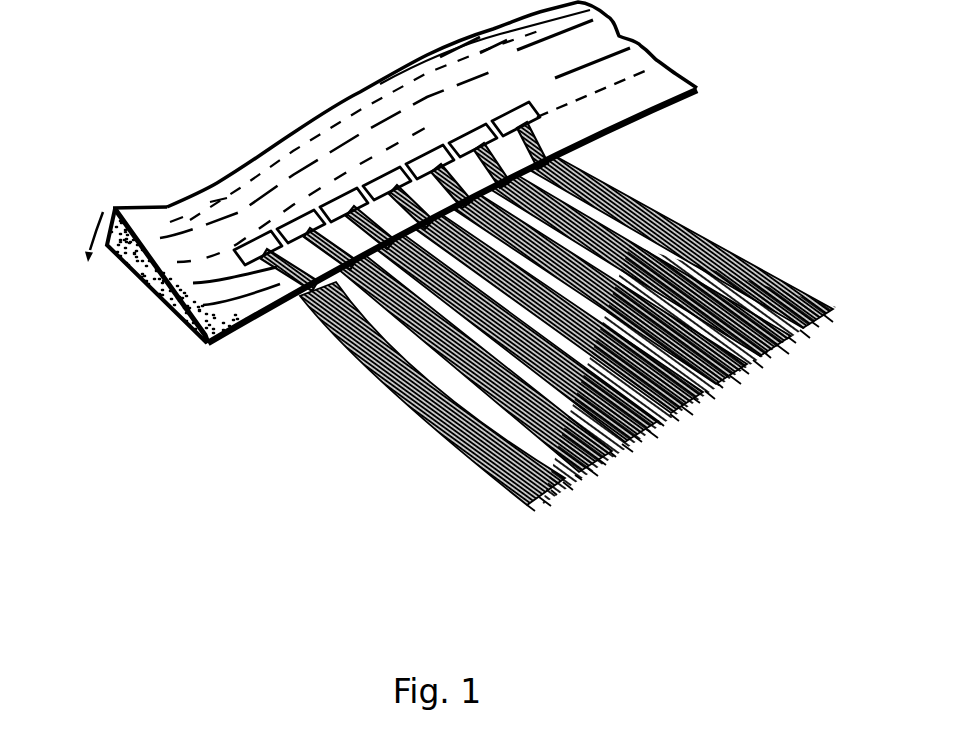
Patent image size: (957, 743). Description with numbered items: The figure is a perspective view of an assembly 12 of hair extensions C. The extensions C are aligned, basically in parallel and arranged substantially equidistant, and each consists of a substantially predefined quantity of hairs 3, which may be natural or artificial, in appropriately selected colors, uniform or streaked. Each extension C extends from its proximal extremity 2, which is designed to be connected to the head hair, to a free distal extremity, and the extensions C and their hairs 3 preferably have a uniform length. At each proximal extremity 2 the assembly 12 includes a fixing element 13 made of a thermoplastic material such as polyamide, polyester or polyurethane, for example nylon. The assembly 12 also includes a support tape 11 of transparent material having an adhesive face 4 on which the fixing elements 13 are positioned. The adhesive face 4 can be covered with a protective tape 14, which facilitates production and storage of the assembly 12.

The proximal extremity 2 is at (333, 290).
The hairs 3 is at (770, 282).
The adhesive face 4 is at (300, 232).
The support tape 11 is at (202, 338).
The assembly 12 is at (176, 440).
The fixing element 13 is at (265, 258).
The protective tape 14 is at (183, 228).
The extension C is at (447, 452).